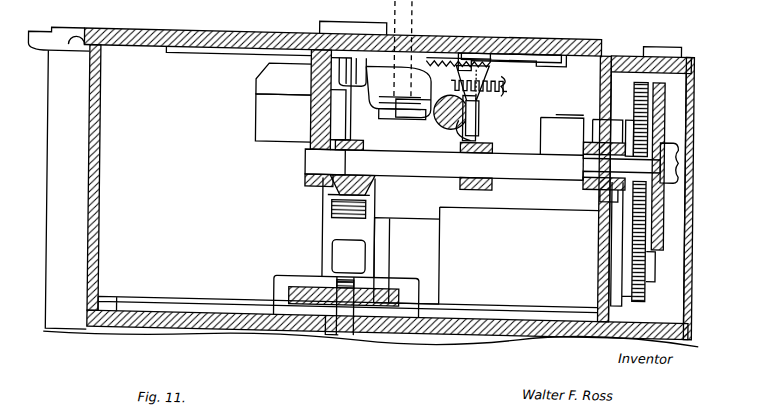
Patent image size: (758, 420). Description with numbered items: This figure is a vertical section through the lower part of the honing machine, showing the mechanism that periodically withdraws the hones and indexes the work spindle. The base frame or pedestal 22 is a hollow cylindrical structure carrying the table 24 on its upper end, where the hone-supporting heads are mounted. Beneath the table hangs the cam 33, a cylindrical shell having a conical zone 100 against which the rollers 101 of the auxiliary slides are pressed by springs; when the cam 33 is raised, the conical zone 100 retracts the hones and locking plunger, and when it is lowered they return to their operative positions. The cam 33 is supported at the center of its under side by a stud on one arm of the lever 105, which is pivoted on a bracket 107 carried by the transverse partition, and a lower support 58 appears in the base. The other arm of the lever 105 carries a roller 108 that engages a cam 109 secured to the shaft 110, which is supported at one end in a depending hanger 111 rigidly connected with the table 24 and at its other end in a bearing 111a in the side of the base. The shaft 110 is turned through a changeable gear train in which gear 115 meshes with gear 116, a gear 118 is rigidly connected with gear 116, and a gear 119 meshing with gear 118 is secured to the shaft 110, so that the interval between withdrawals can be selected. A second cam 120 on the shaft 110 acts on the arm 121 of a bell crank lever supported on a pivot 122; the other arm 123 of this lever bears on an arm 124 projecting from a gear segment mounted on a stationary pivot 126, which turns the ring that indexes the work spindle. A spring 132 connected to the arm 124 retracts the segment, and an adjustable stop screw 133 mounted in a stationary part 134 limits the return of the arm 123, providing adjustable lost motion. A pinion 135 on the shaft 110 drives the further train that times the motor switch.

The base frame or pedestal 22 is at (80, 211).
The table 24 is at (528, 34).
The cam 33 is at (253, 124).
The base pedestal 58 is at (283, 293).
The conical zone 100 is at (260, 82).
The rollers 101 is at (362, 82).
The lever 105 is at (327, 190).
The bracket 107 is at (329, 233).
The roller 108 is at (331, 213).
The cam 109 is at (350, 178).
The shaft 110 is at (427, 177).
The depending hanger 111 is at (311, 141).
The bearing 111a is at (598, 186).
The gear 115 is at (647, 259).
The gear 116 is at (631, 92).
The gear 118 is at (283, 34).
The gear 119 is at (678, 100).
The second cam 120 is at (489, 140).
The arm 121 is at (481, 112).
The pivot 122 is at (432, 117).
The arm 123 is at (451, 58).
The arm 124 is at (412, 68).
The stationary pivot 126 is at (394, 50).
The spring 132 is at (489, 48).
The adjustable stop screw 133 is at (484, 70).
The stationary part 134 is at (479, 87).
The pinion 135 is at (677, 143).